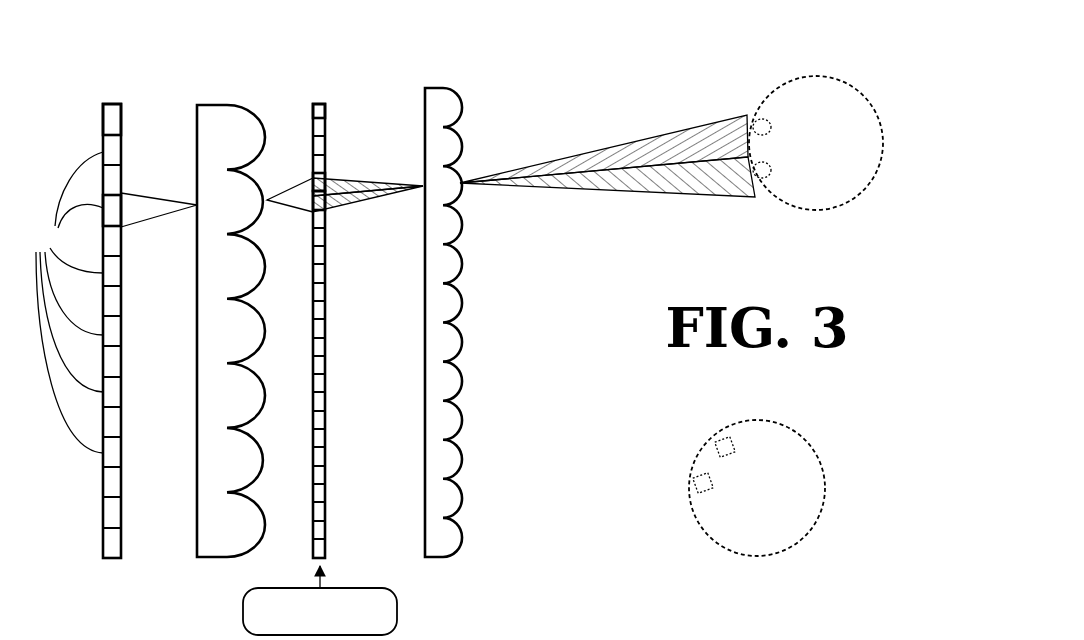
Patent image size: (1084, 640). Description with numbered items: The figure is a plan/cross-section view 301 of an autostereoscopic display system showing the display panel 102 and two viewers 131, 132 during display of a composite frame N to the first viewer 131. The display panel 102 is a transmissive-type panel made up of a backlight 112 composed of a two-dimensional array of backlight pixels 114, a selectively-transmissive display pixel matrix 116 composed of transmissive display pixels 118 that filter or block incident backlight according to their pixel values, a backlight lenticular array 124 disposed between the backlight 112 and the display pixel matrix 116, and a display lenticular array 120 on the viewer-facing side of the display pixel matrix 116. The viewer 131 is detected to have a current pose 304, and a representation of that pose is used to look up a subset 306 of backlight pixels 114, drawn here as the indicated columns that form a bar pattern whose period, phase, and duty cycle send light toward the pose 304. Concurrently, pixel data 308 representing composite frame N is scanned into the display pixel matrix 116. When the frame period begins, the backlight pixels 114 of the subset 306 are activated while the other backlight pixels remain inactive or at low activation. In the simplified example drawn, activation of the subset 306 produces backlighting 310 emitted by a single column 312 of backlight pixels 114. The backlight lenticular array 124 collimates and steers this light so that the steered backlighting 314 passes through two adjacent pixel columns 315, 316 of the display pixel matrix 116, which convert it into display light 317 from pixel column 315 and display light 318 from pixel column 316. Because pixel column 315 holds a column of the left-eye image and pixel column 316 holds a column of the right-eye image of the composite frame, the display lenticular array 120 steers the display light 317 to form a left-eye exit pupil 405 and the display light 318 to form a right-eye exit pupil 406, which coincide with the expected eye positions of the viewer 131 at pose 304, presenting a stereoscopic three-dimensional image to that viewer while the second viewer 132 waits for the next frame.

The display panel 102 is at (203, 40).
The backlight 112 is at (109, 87).
The backlight pixels 114 is at (102, 125).
The selectively-transmissive display pixel matrix 116 is at (318, 87).
The transmissive display pixels 118 is at (327, 108).
The display lenticular array 120 is at (446, 85).
The backlight lenticular array 124 is at (224, 87).
The viewer 131 is at (881, 160).
The viewer 132 is at (825, 498).
The plan/cross-section view 301 is at (553, 83).
The current pose 304 is at (871, 83).
The subset of backlight pixels 306 is at (65, 302).
The pixel data 308 is at (397, 612).
The backlighting 310 is at (160, 220).
The column of backlight pixels 312 is at (112, 208).
The steered backlighting 314 is at (282, 187).
The pixel column 315 is at (321, 184).
The pixel column 316 is at (322, 212).
The display light 317 is at (383, 184).
The display light 318 is at (385, 197).
The left-eye exit pupil 405 is at (772, 170).
The right-eye exit pupil 406 is at (772, 127).